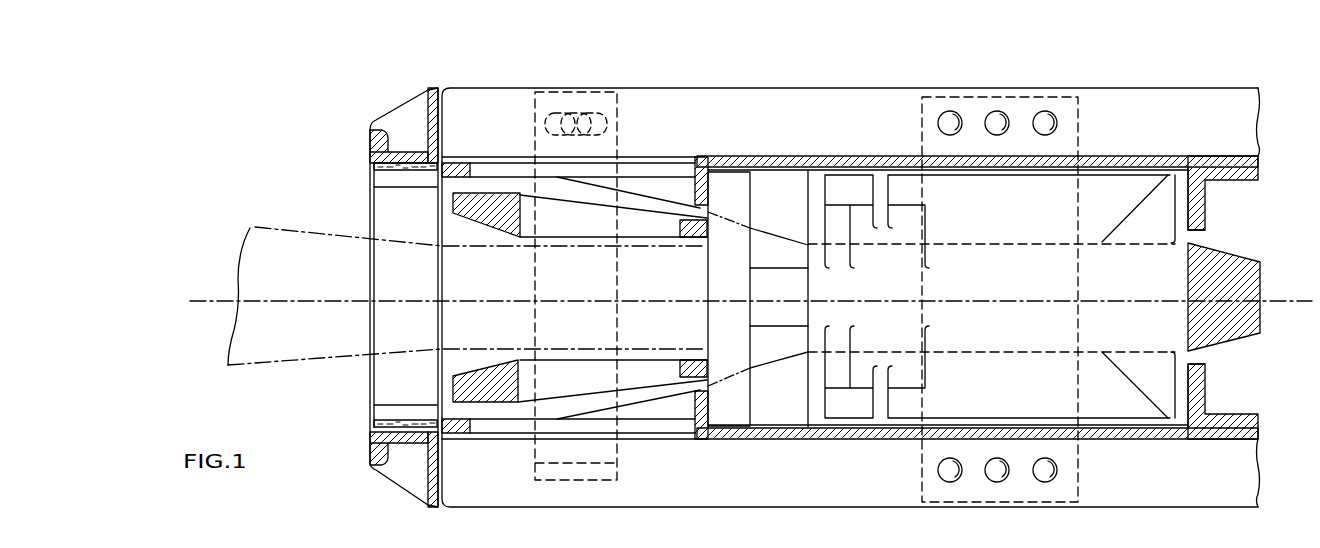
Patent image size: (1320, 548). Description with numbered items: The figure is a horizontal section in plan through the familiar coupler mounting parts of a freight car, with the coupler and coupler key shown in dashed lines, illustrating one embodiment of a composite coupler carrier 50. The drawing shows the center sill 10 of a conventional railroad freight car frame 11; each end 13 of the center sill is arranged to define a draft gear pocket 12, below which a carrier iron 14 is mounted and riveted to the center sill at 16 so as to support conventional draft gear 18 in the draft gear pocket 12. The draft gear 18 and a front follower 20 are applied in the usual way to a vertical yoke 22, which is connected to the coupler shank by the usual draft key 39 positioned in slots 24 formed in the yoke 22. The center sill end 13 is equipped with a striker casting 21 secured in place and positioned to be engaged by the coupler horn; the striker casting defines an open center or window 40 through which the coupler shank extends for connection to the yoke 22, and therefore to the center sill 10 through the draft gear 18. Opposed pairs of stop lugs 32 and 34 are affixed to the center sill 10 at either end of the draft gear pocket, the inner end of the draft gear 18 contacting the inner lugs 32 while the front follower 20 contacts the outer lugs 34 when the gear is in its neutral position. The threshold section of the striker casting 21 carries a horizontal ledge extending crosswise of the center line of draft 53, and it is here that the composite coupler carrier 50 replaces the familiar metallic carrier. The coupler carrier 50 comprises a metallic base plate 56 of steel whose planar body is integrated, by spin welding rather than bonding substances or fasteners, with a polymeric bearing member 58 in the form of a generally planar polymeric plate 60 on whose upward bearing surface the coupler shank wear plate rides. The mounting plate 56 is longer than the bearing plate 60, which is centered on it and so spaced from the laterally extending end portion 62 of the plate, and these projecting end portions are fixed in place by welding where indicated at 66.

The center sill 10 is at (1170, 146).
The freight car frame 11 is at (322, 486).
The draft gear pocket 12 is at (878, 160).
The center sill end 13 is at (500, 80).
The carrier iron 14 is at (1060, 106).
The rivets 16 is at (992, 112).
The draft gear 18 is at (1093, 193).
The front follower 20 is at (734, 182).
The striker casting 21 is at (382, 118).
The vertical yoke 22 is at (1233, 248).
The slots 24 is at (636, 226).
The inner stop lugs 32 is at (1229, 152).
The outer stop lugs 34 is at (704, 150).
The draft key 39 is at (583, 458).
The window 40 is at (400, 420).
The composite coupler carrier 50 is at (383, 224).
The center line of draft 53 is at (208, 300).
The metallic base plate 56 is at (395, 410).
The polymeric bearing member 58 is at (395, 335).
The polymeric plate 60 is at (380, 280).
The laterally extending end portion 62 is at (388, 253).
The welds 66 is at (418, 171).